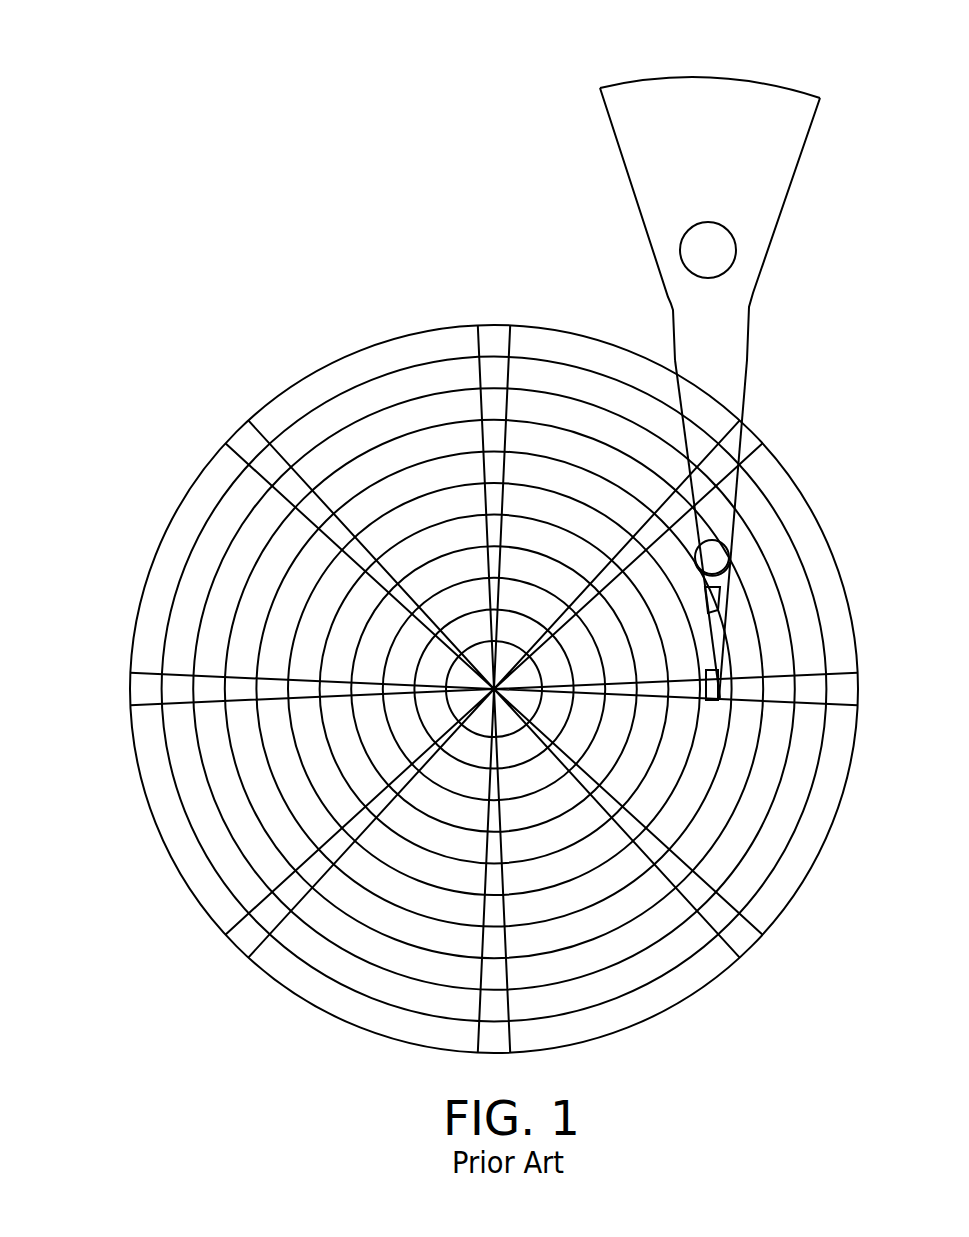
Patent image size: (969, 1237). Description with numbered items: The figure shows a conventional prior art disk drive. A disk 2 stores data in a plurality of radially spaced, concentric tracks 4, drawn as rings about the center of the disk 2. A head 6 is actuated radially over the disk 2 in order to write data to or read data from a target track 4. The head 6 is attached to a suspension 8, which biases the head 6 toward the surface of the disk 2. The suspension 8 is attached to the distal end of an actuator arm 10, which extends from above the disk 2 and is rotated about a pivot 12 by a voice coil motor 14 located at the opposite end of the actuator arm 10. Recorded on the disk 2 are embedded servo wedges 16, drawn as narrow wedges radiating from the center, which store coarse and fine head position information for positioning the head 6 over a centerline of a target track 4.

The disk 2 is at (216, 327).
The track 4 is at (342, 378).
The head 6 is at (712, 698).
The suspension 8 is at (712, 650).
The actuator arm 10 is at (743, 338).
The pivot 12 is at (708, 250).
The voice coil motor 14 is at (718, 66).
The servo wedges 16 is at (493, 338).